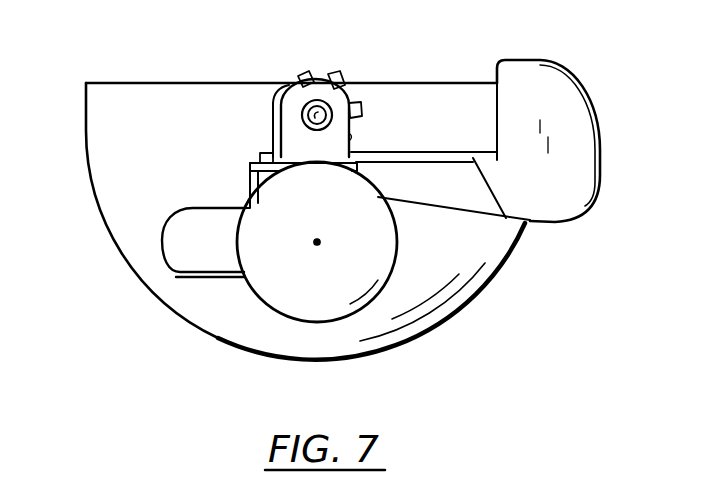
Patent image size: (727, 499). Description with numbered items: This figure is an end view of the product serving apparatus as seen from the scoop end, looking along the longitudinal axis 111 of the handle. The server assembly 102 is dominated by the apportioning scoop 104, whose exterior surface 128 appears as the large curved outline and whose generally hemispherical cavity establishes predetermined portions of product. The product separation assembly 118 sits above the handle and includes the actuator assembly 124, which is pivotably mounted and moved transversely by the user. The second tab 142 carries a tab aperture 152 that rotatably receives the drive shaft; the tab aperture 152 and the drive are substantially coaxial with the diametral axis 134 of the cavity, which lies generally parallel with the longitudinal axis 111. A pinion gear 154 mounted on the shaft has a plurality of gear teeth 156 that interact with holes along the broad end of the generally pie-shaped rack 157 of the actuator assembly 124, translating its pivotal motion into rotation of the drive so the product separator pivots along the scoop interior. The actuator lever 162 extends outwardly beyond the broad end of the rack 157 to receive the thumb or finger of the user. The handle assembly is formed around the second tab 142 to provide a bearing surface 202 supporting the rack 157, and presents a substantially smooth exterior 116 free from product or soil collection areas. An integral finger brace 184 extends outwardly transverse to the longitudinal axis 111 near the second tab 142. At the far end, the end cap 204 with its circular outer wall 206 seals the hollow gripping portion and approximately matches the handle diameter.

The server assembly 102 is at (96, 199).
The apportioning scoop 104 is at (130, 44).
The longitudinal axis 111 is at (317, 242).
The substantially smooth exterior 116 is at (273, 313).
The product separation assembly 118 is at (378, 117).
The actuator assembly 124 is at (427, 137).
The exterior surface 128 is at (446, 308).
The diametral axis 134 is at (303, 121).
The second tab 142 is at (324, 82).
The tab aperture 152 is at (312, 112).
The pinion gear 154 is at (282, 90).
The gear teeth 156 is at (306, 70).
The pie-shaped rack 157 is at (530, 222).
The actuator lever 162 is at (584, 149).
The integral finger brace 184 is at (183, 274).
The bearing surface 202 is at (262, 156).
The end cap 204 is at (377, 297).
The circular outer wall 206 is at (398, 262).